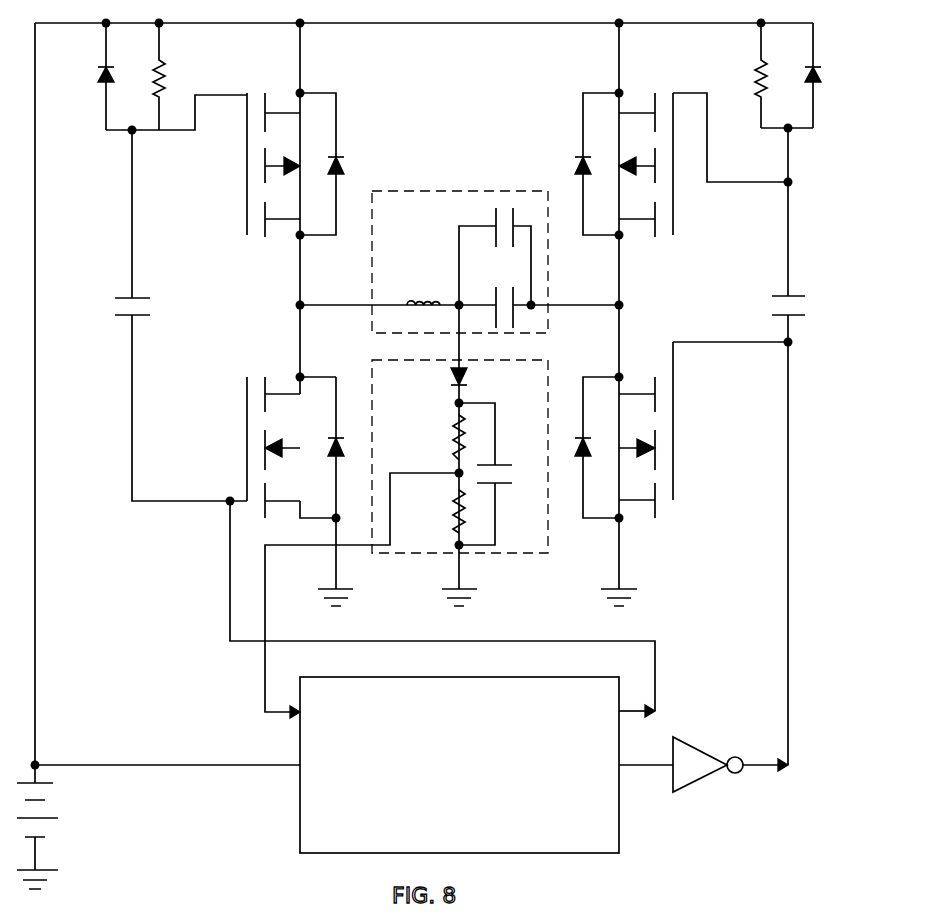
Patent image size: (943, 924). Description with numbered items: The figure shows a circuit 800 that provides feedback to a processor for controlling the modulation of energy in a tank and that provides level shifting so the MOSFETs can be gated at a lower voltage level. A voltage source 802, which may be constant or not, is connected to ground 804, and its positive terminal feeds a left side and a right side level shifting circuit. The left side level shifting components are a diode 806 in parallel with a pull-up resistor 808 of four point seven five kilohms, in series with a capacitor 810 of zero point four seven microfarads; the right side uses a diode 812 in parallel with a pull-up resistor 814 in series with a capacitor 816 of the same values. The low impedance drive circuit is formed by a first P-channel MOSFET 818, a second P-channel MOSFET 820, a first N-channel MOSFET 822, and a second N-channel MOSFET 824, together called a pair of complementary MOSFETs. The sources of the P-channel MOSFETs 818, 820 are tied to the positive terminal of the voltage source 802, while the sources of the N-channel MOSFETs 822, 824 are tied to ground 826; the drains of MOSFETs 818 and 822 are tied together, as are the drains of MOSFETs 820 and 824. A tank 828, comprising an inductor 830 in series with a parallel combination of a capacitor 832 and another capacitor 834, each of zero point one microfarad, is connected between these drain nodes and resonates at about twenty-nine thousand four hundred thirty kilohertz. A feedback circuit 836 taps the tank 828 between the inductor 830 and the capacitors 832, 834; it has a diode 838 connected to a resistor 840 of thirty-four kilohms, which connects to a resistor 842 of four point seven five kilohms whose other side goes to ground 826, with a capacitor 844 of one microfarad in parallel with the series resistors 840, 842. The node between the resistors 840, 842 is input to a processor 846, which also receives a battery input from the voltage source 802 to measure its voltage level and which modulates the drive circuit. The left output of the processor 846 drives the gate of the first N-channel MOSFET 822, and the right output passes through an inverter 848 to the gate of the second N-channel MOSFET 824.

The circuit 800 is at (680, 843).
The voltage source 802 is at (58, 818).
The ground 804 is at (58, 870).
The diode 806 is at (98, 76).
The pull-up resistor 808 is at (164, 65).
The capacitor 810 is at (134, 297).
The diode 812 is at (822, 79).
The pull-up resistor 814 is at (757, 67).
The capacitor 816 is at (778, 296).
The first P-channel MOSFET 818 is at (352, 166).
The second P-channel MOSFET 820 is at (567, 166).
The first N-channel MOSFET 822 is at (231, 419).
The second N-channel MOSFET 824 is at (693, 422).
The ground 826 is at (658, 599).
The tank 828 is at (443, 191).
The inductor 830 is at (428, 303).
The capacitor 832 is at (494, 219).
The capacitor 834 is at (514, 317).
The feedback circuit 836 is at (522, 553).
The diode 838 is at (452, 386).
The resistor 840 is at (455, 433).
The resistor 842 is at (455, 505).
The capacitor 844 is at (510, 483).
The processor 846 is at (300, 837).
The inverter 848 is at (694, 748).